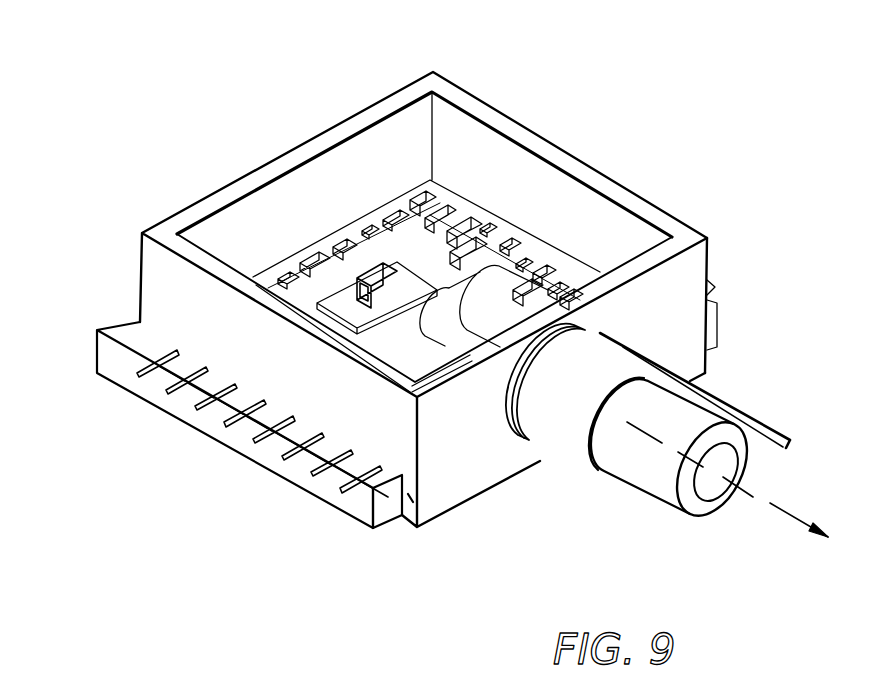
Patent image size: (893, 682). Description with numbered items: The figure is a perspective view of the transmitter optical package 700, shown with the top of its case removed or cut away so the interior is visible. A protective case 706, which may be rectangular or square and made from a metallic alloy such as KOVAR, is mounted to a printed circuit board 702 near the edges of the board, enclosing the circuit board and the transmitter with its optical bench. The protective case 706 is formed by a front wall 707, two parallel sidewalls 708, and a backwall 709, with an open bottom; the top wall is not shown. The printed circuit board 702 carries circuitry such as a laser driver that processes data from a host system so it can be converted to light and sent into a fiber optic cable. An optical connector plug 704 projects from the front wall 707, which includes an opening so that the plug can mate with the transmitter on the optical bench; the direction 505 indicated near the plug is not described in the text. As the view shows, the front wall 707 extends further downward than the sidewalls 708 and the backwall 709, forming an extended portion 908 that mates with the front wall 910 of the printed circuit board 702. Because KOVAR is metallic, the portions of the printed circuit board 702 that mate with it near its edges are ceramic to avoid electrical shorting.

The transmitter optical package 700 is at (145, 111).
The printed circuit board 702 is at (128, 334).
The optical connector plug 704 is at (695, 393).
The mating direction axis 505 is at (780, 507).
The protective case 706 is at (438, 66).
The front wall 707 is at (672, 320).
The sidewalls 708 is at (553, 197).
The backwall 709 is at (348, 183).
The extended portion 908 is at (410, 496).
The front wall of the printed circuit board 910 is at (381, 511).